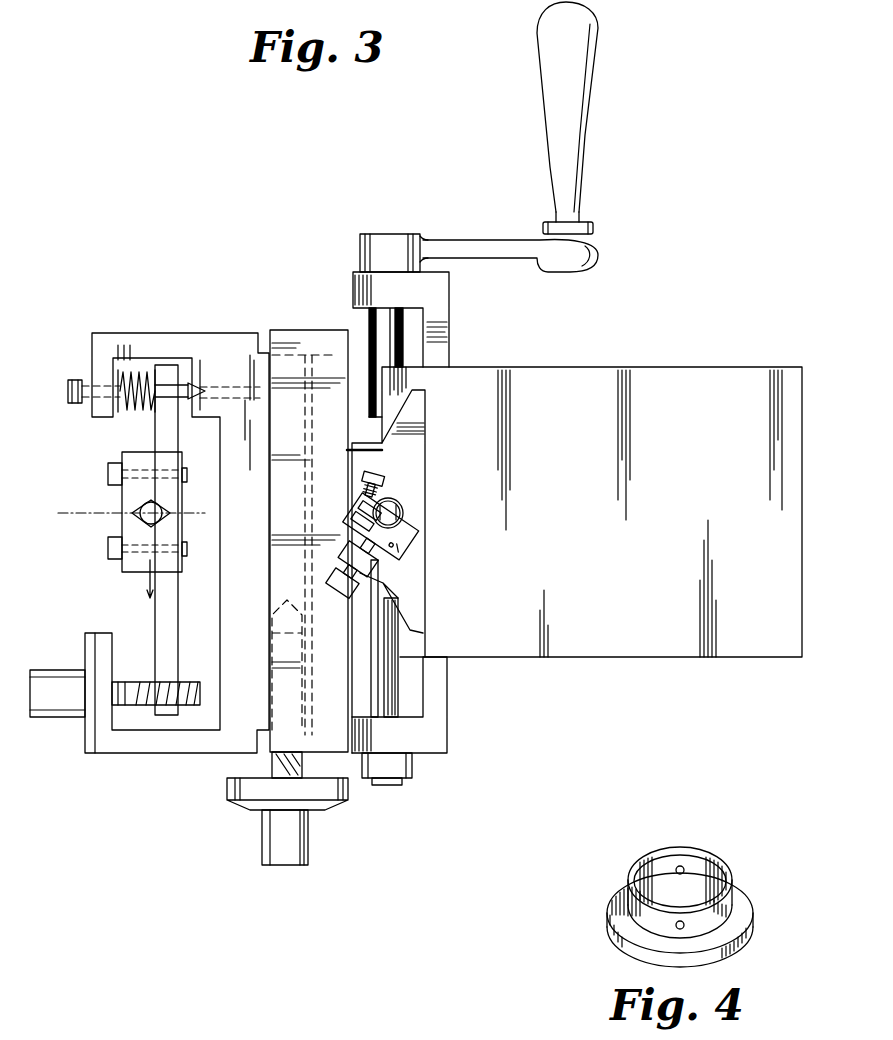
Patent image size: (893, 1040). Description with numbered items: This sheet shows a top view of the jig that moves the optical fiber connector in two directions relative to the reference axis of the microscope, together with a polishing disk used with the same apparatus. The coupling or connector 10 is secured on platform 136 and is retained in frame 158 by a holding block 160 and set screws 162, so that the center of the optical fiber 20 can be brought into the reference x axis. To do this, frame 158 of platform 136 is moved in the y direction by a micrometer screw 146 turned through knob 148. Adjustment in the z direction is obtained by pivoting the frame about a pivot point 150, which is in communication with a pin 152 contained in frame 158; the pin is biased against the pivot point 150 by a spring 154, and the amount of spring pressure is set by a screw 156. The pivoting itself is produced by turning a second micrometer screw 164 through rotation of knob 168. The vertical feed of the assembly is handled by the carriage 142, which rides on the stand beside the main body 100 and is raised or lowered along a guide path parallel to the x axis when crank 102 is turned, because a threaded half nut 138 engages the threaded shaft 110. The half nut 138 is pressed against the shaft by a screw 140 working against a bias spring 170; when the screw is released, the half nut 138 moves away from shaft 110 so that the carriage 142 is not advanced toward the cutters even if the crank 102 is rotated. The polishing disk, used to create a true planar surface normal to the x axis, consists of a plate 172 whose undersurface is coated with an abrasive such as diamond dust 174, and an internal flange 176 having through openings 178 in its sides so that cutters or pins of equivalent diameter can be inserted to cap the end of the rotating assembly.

In FIG. 3, the coupling 10 is at (121, 525).
In FIG. 3, the optical fiber 20 is at (160, 507).
In FIG. 3, the base body 100 is at (633, 370).
In FIG. 3, the crank 102 is at (573, 182).
In FIG. 3, the threaded shaft 110 is at (403, 513).
In FIG. 3, the platform 136 is at (157, 761).
In FIG. 3, the threaded half nut 138 is at (398, 573).
In FIG. 3, the screw 140 is at (347, 590).
In FIG. 3, the carriage 142 is at (318, 305).
In FIG. 3, the micrometer screw 146 is at (285, 770).
In FIG. 3, the knob 148 is at (295, 865).
In FIG. 3, the pivot point 150 is at (205, 394).
In FIG. 3, the pin 152 is at (200, 388).
In FIG. 3, the spring 154 is at (140, 372).
In FIG. 3, the screw 156 is at (68, 391).
In FIG. 3, the frame 158 is at (160, 612).
In FIG. 3, the holding block 160 is at (122, 500).
In FIG. 3, the set screws 162 is at (108, 473).
In FIG. 3, the micrometer screw 164 is at (200, 688).
In FIG. 3, the knob 168 is at (52, 717).
In FIG. 3, the bias spring 170 is at (375, 488).
In FIG. 4, the plate 172 is at (755, 925).
In FIG. 4, the diamond dust 174 is at (727, 953).
In FIG. 4, the internal flange 176 is at (733, 897).
In FIG. 4, the through openings 178 is at (683, 867).